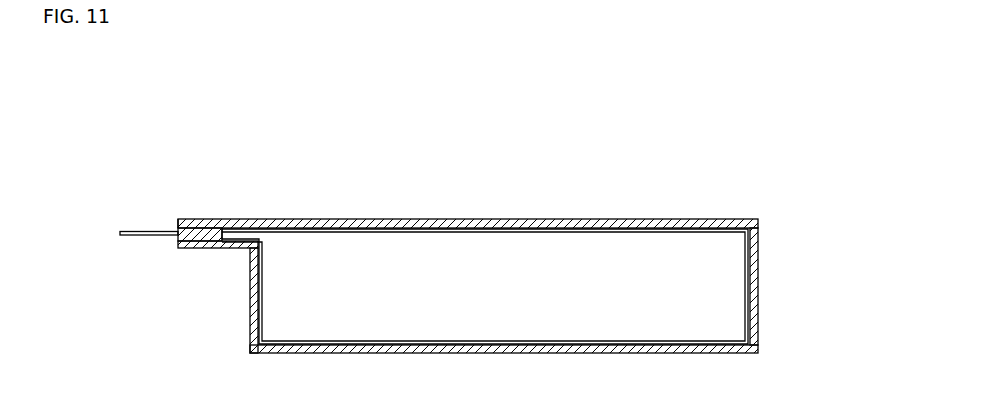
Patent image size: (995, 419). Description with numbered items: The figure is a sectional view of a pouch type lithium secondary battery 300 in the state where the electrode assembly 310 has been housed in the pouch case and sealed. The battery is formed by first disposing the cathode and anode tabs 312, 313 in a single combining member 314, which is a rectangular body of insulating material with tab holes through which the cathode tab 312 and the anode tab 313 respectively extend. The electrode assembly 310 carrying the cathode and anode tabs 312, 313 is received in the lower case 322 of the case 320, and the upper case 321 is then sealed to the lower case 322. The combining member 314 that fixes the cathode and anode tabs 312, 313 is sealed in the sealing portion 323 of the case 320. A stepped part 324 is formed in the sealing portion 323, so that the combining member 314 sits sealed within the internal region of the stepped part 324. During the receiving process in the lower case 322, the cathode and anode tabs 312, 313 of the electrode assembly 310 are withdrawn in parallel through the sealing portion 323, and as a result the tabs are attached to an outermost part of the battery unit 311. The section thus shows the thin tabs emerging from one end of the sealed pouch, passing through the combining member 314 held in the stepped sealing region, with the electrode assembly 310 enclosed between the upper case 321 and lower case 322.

The pouch type lithium secondary battery 300 is at (127, 94).
The electrode assembly 310 is at (251, 310).
The battery unit 311 is at (340, 327).
The cathode tab 312 is at (123, 208).
The anode tab 313 is at (132, 231).
The combining member 314 is at (210, 239).
The case 320 is at (495, 250).
The upper case 321 is at (718, 220).
The lower case 322 is at (758, 267).
The sealing portion 323 is at (205, 249).
The stepped part 324 is at (179, 212).